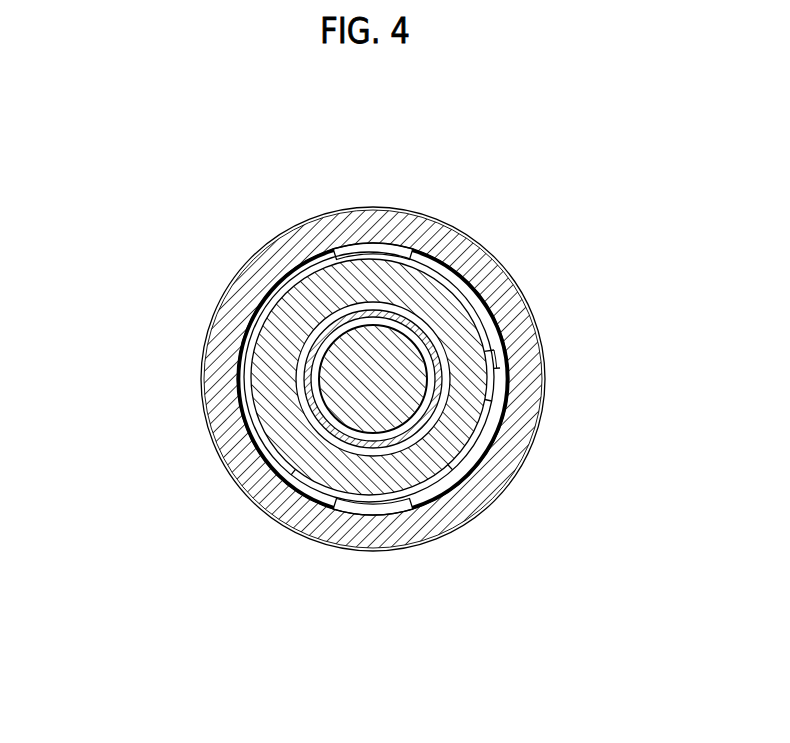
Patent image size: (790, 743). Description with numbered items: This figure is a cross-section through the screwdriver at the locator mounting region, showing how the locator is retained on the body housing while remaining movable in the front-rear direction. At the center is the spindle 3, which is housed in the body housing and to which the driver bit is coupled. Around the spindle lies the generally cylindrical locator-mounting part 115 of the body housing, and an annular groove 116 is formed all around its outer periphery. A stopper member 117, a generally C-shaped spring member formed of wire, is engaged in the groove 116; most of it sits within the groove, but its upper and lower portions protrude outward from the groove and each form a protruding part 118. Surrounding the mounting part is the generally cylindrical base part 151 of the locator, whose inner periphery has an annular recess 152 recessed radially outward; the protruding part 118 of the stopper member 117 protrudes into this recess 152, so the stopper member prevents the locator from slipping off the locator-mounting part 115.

The spindle 3 is at (393, 353).
The locator-mounting part 115 is at (458, 347).
The annular groove 116 is at (498, 372).
The stopper member 117 is at (272, 298).
The protruding part 118 is at (362, 248).
The base part 151 is at (250, 483).
The annular recess 152 is at (253, 446).